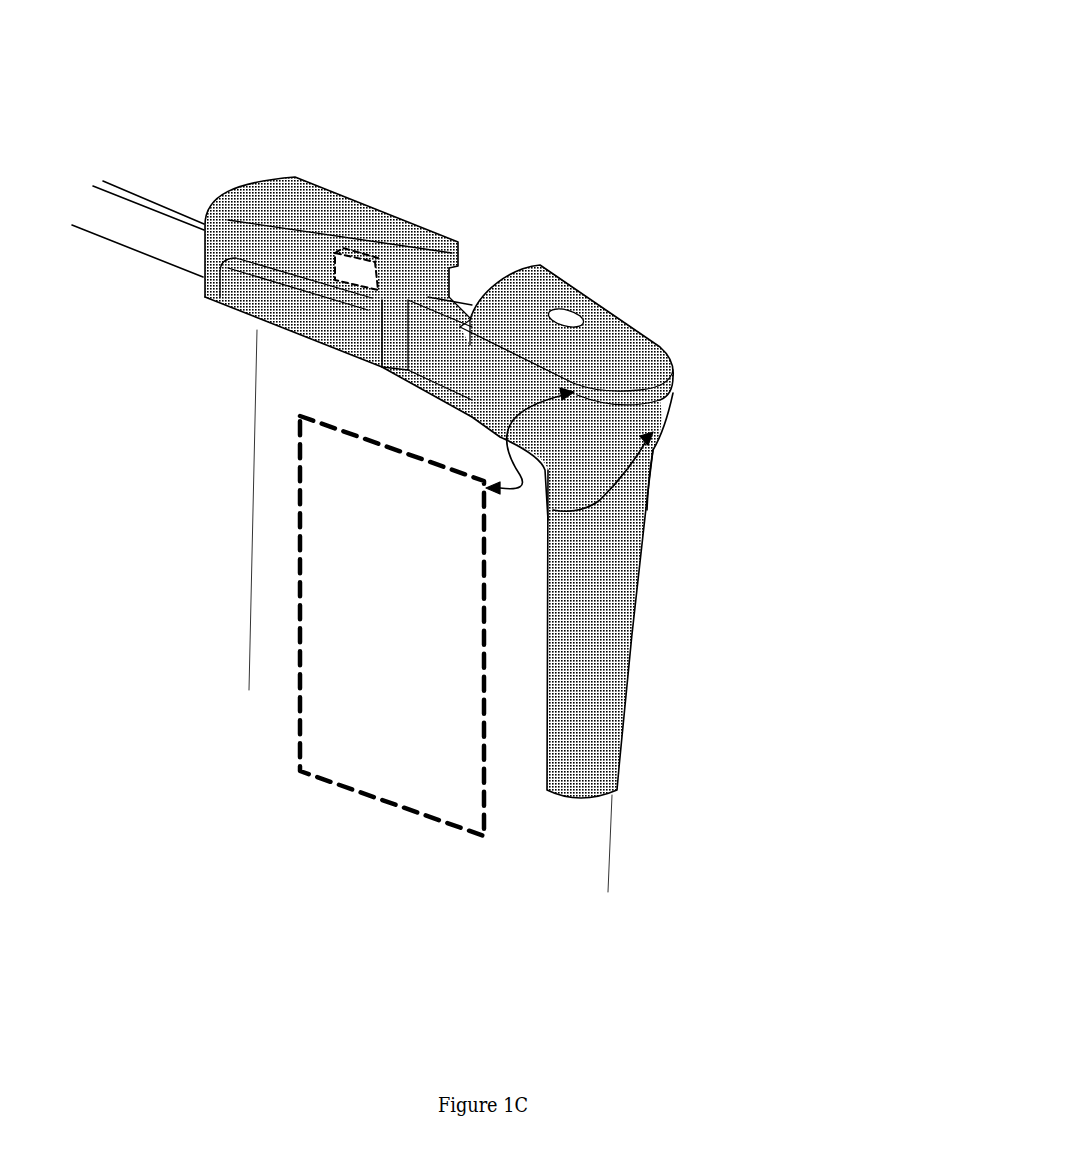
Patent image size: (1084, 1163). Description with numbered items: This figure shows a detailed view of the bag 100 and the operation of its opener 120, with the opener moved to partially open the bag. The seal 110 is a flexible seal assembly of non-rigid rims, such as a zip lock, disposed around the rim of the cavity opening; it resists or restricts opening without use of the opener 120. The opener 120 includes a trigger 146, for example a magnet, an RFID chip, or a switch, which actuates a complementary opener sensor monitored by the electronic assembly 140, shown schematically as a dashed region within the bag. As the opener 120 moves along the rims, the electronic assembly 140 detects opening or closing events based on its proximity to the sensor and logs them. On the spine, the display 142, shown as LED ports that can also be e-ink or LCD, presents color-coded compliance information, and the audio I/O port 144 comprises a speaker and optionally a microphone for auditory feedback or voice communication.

The bag 100 is at (822, 84).
The seal 110 is at (130, 202).
The opener 120 is at (337, 222).
The electronic assembly 140 is at (437, 612).
The display 142 is at (660, 385).
The audio I/O port 144 is at (655, 450).
The trigger 146 is at (347, 282).